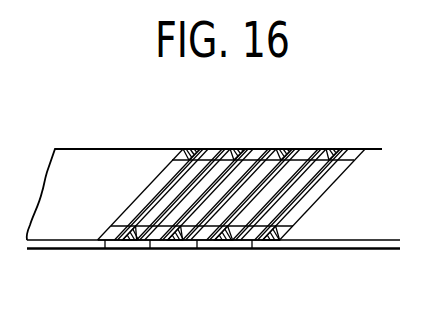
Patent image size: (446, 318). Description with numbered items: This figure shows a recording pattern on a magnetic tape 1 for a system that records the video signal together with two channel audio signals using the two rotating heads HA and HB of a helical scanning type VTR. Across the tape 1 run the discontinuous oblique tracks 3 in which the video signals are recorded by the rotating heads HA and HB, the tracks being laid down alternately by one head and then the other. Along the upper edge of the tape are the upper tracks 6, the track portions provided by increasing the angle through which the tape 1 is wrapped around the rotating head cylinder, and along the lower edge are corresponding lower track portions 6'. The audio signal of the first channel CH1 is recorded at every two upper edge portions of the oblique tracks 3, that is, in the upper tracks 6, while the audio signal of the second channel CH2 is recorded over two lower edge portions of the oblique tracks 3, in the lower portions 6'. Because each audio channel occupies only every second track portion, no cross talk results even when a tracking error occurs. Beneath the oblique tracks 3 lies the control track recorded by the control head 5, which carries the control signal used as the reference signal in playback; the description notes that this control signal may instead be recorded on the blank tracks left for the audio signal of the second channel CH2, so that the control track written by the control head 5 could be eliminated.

The magnetic tape 1 is at (71, 163).
The oblique tracks 3 is at (370, 168).
The control head 5 is at (38, 253).
The upper tracks 6 is at (289, 157).
The lower heater layer 6' is at (219, 226).
The channel CH1 is at (160, 158).
The channel CH2 is at (97, 232).
The rotating head HA is at (263, 142).
The rotating head HB is at (249, 171).